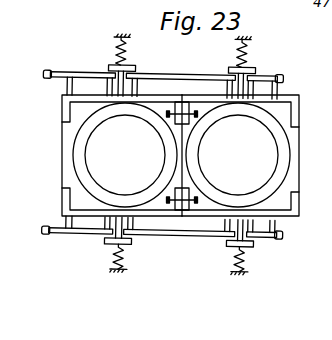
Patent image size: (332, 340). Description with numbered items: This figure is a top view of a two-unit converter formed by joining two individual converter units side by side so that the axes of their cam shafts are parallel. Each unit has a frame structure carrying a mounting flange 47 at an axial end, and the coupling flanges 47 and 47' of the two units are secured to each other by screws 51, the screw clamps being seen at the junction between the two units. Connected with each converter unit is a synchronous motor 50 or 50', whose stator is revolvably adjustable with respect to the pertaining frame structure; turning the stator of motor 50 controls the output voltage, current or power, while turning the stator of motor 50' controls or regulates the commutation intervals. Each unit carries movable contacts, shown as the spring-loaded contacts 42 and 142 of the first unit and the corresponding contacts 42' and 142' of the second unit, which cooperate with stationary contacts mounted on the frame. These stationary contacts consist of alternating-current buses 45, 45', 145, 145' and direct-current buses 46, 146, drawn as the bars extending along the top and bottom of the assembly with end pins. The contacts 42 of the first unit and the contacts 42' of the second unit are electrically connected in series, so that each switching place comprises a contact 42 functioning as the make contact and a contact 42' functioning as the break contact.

The movable contact 142 is at (102, 65).
The movable contact 142' is at (267, 67).
The alternating-current bus 145 is at (79, 73).
The alternating-current bus 145' is at (180, 75).
The direct-current bus 146 is at (270, 75).
The synchronous motor 50 is at (125, 155).
The synchronous motor 50' is at (238, 155).
The mounting flange 47 is at (122, 155).
The mounting flange 47' is at (240, 155).
The screw 51 is at (192, 203).
The alternating-current bus 45 is at (77, 249).
The alternating-current bus 45' is at (179, 250).
The direct-current bus 46 is at (267, 240).
The movable contact 42 is at (133, 249).
The movable contact 42' is at (227, 260).